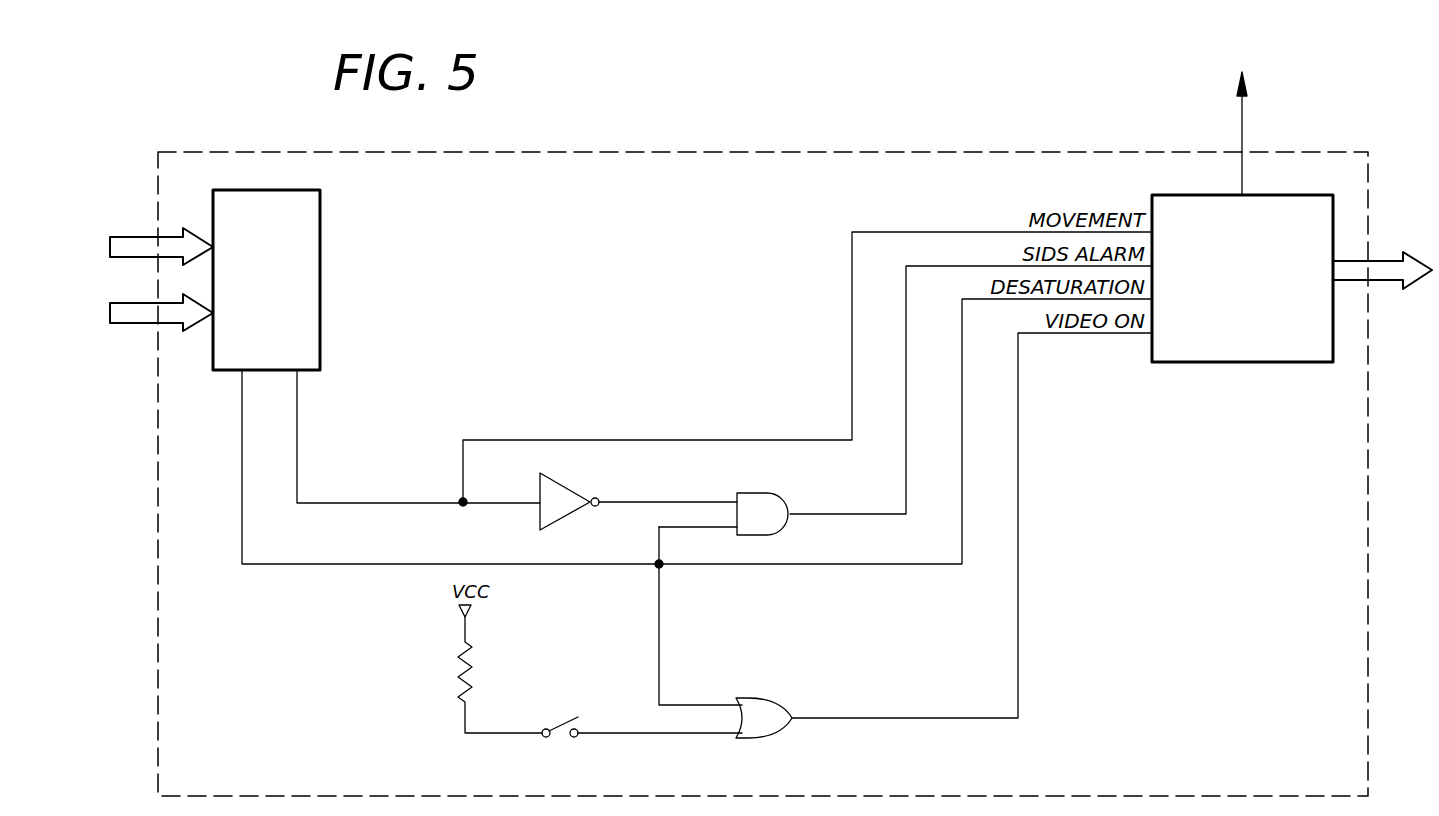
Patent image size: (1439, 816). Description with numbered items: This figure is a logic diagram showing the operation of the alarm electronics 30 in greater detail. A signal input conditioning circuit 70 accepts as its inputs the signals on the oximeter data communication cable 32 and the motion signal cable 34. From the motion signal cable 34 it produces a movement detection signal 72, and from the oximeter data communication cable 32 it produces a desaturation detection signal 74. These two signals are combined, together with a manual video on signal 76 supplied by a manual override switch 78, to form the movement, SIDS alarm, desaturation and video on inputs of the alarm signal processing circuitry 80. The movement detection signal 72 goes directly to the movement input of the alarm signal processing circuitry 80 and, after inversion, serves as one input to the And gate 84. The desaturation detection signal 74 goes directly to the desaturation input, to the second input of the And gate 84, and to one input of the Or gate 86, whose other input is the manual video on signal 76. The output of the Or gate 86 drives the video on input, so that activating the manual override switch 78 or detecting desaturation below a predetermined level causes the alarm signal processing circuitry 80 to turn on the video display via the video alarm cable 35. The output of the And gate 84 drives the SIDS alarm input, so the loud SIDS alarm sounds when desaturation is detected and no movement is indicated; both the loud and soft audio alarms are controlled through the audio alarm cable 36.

The alarm electronics 30 is at (1283, 152).
The oximeter data communication cable 32 is at (125, 237).
The motion signal cable 34 is at (125, 323).
The video alarm cable 35 is at (1377, 281).
The audio alarm cable 36 is at (1242, 124).
The signal input conditioning circuit 70 is at (266, 280).
The movement detection signal 72 is at (298, 448).
The desaturation detection signal 74 is at (242, 492).
The manual video on signal 76 is at (632, 733).
The manual override switch 78 is at (562, 724).
The alarm signal processing circuitry 80 is at (1242, 278).
The And gate 84 is at (566, 482).
The Or gate 86 is at (762, 698).